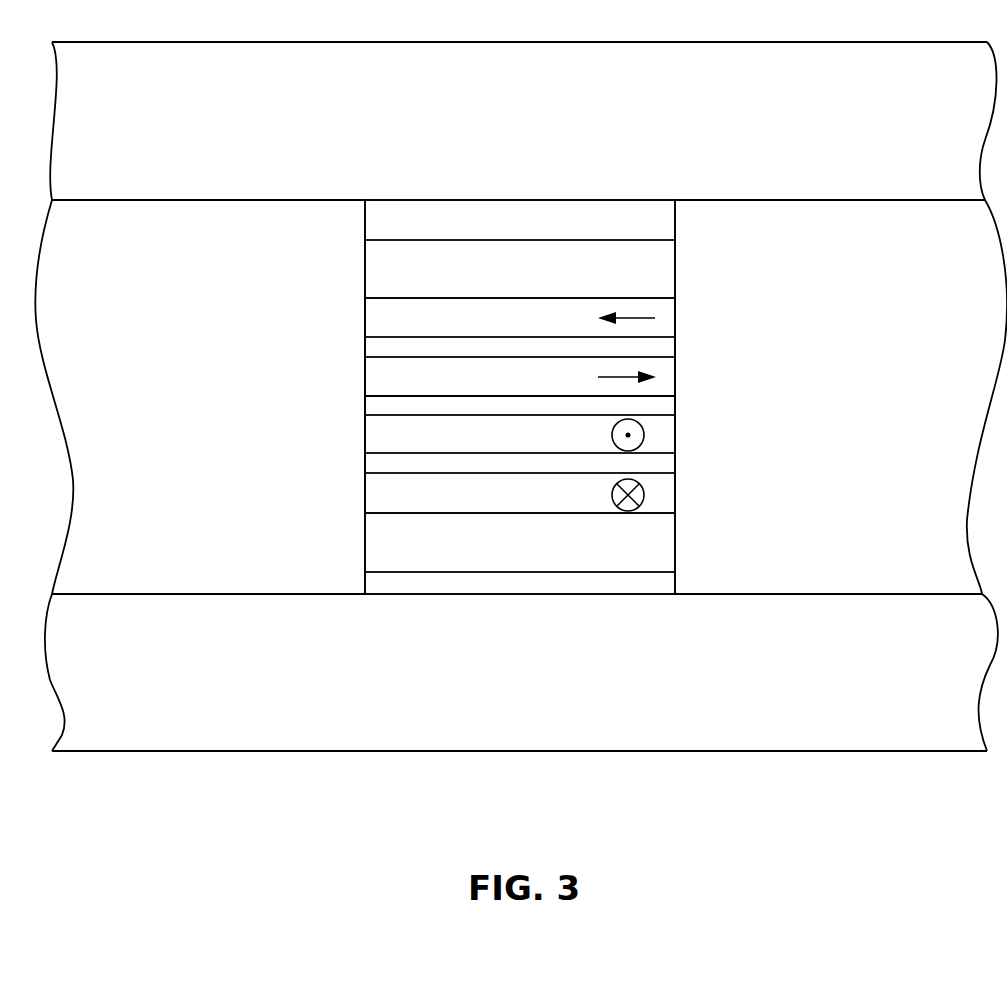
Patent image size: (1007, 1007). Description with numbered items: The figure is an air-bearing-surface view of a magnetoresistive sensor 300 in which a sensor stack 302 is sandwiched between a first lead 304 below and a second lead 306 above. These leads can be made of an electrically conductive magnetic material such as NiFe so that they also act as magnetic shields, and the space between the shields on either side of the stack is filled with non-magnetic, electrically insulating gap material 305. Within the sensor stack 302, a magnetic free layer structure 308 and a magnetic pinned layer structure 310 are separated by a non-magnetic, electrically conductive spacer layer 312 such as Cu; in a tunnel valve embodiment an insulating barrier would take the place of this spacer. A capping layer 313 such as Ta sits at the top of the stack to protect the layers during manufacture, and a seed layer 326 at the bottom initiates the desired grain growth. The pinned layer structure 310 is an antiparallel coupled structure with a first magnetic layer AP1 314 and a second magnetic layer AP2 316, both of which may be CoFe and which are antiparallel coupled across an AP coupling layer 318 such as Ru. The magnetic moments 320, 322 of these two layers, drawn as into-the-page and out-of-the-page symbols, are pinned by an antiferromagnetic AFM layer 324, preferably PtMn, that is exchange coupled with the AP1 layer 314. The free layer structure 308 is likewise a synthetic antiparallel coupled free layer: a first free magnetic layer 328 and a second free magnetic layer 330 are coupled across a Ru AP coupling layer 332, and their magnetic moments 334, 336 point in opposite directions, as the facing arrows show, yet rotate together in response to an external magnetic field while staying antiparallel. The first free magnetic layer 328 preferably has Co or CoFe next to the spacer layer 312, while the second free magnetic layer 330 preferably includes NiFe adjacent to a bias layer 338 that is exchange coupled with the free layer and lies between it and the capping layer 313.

The magnetoresistive sensor 300 is at (657, 36).
The sensor stack 302 is at (697, 249).
The first lead 304 is at (588, 667).
The gap material 305 is at (218, 367).
The second lead 306 is at (585, 120).
The free layer structure 308 is at (357, 397).
The pinned layer structure 310 is at (357, 512).
The spacer layer 312 is at (460, 406).
The capping layer 313 is at (590, 218).
The first magnetic layer AP1 314 is at (588, 493).
The second magnetic layer AP2 316 is at (588, 433).
The AP coupling layer 318 is at (447, 465).
The magnetic moment of AP1 layer 320 is at (644, 495).
The magnetic moment of AP2 layer 322 is at (644, 435).
The AFM layer 324 is at (590, 542).
The seed layer 326 is at (445, 585).
The first free magnetic layer 328 is at (588, 375).
The second free magnetic layer 330 is at (588, 315).
The AP coupling layer 332 is at (452, 347).
The magnetic moment of first free magnetic layer 334 is at (626, 375).
The magnetic moment of second free magnetic layer 336 is at (655, 318).
The bias layer 338 is at (590, 267).